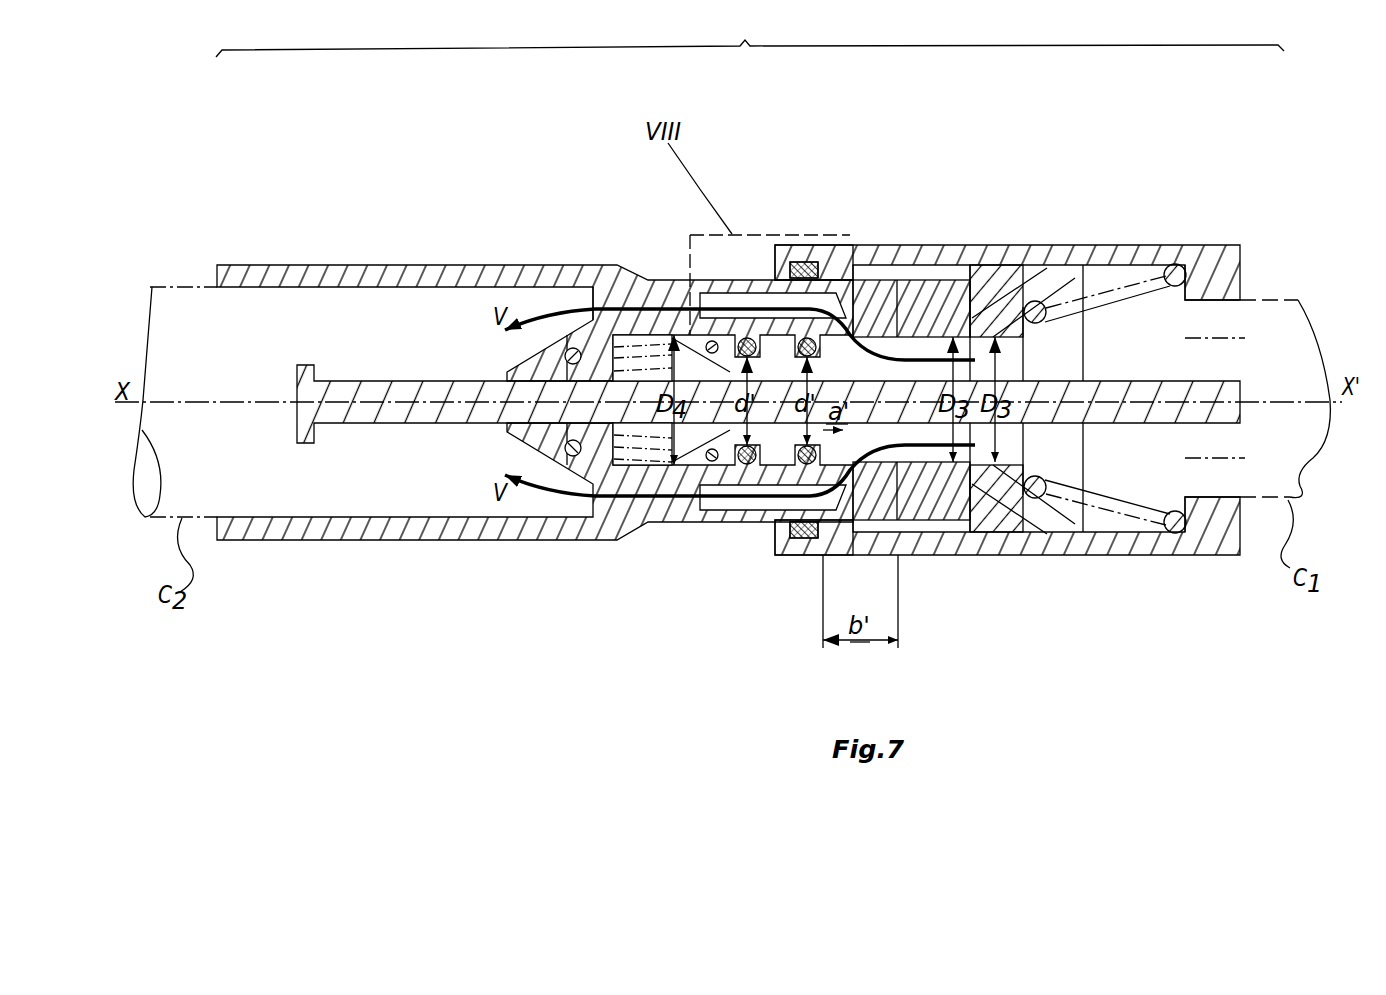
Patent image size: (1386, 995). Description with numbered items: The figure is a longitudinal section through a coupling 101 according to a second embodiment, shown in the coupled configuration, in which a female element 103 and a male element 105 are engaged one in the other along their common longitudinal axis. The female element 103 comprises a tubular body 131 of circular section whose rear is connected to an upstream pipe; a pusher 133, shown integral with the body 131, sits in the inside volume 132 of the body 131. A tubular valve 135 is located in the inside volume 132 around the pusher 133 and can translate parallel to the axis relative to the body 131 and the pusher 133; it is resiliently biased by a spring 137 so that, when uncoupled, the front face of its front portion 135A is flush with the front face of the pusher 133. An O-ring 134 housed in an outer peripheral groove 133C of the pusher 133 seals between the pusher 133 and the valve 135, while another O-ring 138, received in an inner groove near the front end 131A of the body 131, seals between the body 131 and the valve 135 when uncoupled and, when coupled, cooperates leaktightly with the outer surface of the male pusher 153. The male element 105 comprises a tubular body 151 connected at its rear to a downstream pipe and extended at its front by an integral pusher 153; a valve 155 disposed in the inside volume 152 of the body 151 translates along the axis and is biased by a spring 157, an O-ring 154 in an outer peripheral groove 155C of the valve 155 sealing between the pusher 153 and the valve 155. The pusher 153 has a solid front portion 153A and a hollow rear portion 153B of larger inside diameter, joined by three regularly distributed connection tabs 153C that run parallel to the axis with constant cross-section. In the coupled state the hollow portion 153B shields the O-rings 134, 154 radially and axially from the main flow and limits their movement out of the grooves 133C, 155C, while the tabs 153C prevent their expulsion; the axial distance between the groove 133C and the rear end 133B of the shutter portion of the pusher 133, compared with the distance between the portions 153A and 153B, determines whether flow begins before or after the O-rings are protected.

The coupling 101 is at (750, 32).
The female element 103 is at (1100, 180).
The male element 105 is at (392, 203).
The tubular body 131 is at (1048, 543).
The front end of the body 131A is at (770, 257).
The inside volume 132 is at (1228, 326).
The pusher 133 is at (905, 475).
The rear end of the shutter portion 133B is at (856, 462).
The outer peripheral groove 133C is at (815, 500).
The O-ring 134 is at (848, 300).
The tubular valve 135 is at (997, 508).
The front portion of the valve 135A is at (993, 292).
The spring 137 is at (1120, 510).
The O-ring 138 is at (806, 262).
The tubular body 151 is at (293, 527).
The inside volume 152 is at (236, 319).
The pusher 153 is at (633, 475).
The solid front portion 153A is at (930, 292).
The hollow rear portion 153B is at (780, 500).
The connection tabs 153C is at (870, 293).
The O-ring 154 is at (745, 338).
The valve 155 is at (357, 413).
The outer peripheral groove 155C is at (758, 478).
The spring 157 is at (592, 448).